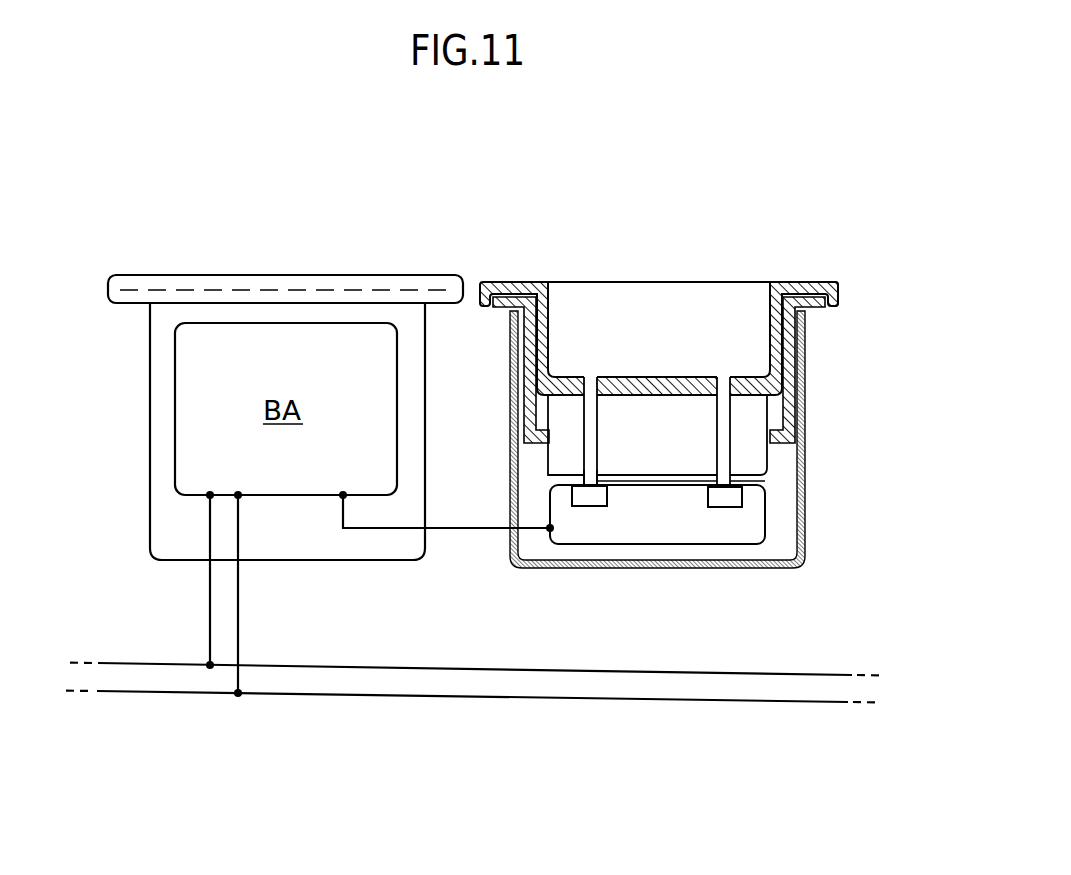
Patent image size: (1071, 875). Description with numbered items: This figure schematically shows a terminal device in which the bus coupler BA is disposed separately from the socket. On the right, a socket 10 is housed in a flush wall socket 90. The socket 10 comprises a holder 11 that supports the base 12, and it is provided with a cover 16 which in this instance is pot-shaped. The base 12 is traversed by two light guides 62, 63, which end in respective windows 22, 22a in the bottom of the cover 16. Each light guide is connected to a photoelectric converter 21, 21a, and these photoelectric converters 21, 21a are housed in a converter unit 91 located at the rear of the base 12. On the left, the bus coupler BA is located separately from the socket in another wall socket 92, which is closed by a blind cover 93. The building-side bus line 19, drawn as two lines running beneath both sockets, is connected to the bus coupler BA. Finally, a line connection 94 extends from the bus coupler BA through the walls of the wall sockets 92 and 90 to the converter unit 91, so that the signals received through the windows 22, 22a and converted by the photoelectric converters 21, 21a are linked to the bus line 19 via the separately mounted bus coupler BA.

The socket 10 is at (675, 417).
The holder 11 is at (790, 436).
The base 12 is at (752, 462).
The cover 16 is at (779, 284).
The bus line 19 is at (157, 666).
The photoelectric converter 21 is at (592, 500).
The photoelectric converter 21a is at (728, 500).
The window 22 is at (593, 377).
The window 22a is at (727, 378).
The light guide 62 is at (587, 460).
The light guide 63 is at (795, 398).
The wall socket 90 is at (806, 528).
The converter unit 91 is at (663, 527).
The wall socket 92 is at (150, 418).
The blind cover 93 is at (355, 287).
The line connection 94 is at (466, 531).